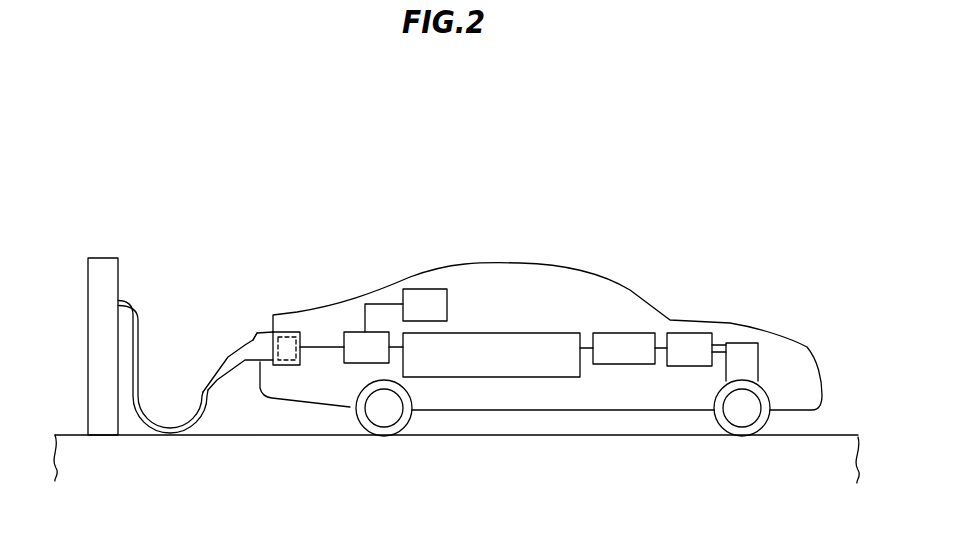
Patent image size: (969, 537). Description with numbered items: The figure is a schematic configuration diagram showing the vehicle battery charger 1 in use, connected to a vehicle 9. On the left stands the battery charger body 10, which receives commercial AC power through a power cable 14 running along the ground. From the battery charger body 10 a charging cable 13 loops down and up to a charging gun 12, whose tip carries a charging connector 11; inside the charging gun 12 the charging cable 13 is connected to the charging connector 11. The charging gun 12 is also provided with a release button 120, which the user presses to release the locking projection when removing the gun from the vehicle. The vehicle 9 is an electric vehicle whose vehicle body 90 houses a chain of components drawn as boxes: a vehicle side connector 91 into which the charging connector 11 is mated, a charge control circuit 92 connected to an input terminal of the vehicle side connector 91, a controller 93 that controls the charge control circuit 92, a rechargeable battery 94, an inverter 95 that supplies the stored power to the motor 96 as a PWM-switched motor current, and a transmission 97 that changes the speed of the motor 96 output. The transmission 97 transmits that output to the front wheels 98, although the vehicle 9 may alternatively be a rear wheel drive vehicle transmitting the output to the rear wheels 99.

The vehicle battery charger 1 is at (156, 244).
The vehicle 9 is at (442, 233).
The battery charger body 10 is at (88, 288).
The charging connector 11 is at (289, 337).
The charging gun 12 is at (230, 355).
The charging cable 13 is at (137, 368).
The power cable 14 is at (78, 433).
The release button 120 is at (257, 333).
The vehicle body 90 is at (547, 411).
The vehicle side connector 91 is at (295, 337).
The charge control circuit 92 is at (356, 332).
The controller 93 is at (413, 288).
The rechargeable battery 94 is at (553, 332).
The inverter 95 is at (621, 332).
The motor 96 is at (680, 333).
The transmission 97 is at (760, 364).
The front wheels 98 is at (757, 435).
The rear wheels 99 is at (363, 433).